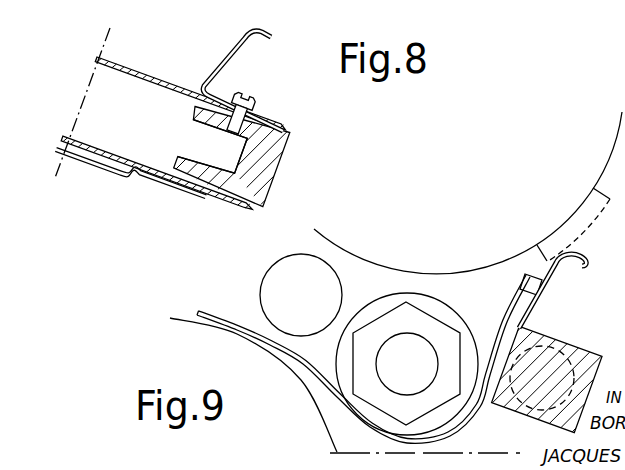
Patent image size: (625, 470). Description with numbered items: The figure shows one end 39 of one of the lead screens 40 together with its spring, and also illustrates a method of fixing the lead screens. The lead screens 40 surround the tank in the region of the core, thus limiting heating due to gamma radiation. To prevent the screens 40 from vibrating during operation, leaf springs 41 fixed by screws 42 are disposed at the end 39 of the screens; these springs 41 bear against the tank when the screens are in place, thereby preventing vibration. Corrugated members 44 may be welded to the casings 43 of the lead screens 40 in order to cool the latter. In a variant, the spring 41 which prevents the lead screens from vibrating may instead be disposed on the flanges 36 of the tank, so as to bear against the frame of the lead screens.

In FIG. 9, the flanges 36 is at (489, 273).
In FIG. 8, the end 39 is at (217, 153).
In FIG. 8, the lead screens 40 is at (122, 119).
In FIG. 8, the leaf springs 41 is at (237, 48).
In FIG. 9, the leaf springs 41 is at (560, 269).
In FIG. 8, the screws 42 is at (256, 110).
In FIG. 8, the casings 43 is at (224, 201).
In FIG. 8, the corrugated members 44 is at (128, 181).